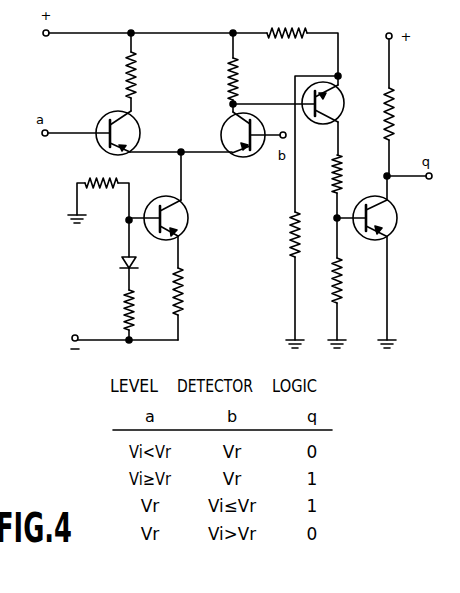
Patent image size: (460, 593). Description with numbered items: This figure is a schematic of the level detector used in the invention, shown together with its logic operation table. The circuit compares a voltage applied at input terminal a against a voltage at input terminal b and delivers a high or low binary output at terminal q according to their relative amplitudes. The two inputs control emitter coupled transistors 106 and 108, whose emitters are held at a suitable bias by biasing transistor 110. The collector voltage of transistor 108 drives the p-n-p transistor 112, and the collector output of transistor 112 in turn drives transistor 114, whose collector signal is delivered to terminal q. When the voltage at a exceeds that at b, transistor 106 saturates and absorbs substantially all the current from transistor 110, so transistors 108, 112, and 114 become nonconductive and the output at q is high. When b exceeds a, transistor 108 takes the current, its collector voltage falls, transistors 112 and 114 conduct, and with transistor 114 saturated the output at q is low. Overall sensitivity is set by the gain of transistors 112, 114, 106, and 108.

The emitter coupled transistor 106 is at (139, 146).
The emitter coupled transistor 108 is at (221, 140).
The biasing transistor 110 is at (187, 213).
The p-n-p transistor 112 is at (344, 100).
The transistor 114 is at (396, 228).